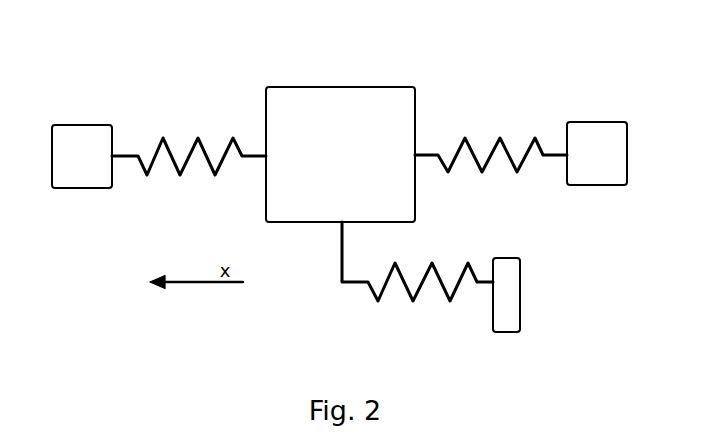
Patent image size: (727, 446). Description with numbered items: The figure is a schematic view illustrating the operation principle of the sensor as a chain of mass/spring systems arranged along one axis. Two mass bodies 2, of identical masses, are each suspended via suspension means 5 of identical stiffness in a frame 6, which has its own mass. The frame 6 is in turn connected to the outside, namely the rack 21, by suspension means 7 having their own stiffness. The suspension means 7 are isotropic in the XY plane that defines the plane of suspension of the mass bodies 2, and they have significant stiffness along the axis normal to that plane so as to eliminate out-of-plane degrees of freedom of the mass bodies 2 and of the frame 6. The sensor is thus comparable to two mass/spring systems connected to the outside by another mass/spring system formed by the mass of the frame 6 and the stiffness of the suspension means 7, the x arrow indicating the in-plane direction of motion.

The mass body 2 is at (83, 130).
The suspension means 5 is at (170, 150).
The frame 6 is at (368, 90).
The suspension means 7 is at (402, 282).
The rack 21 is at (515, 293).